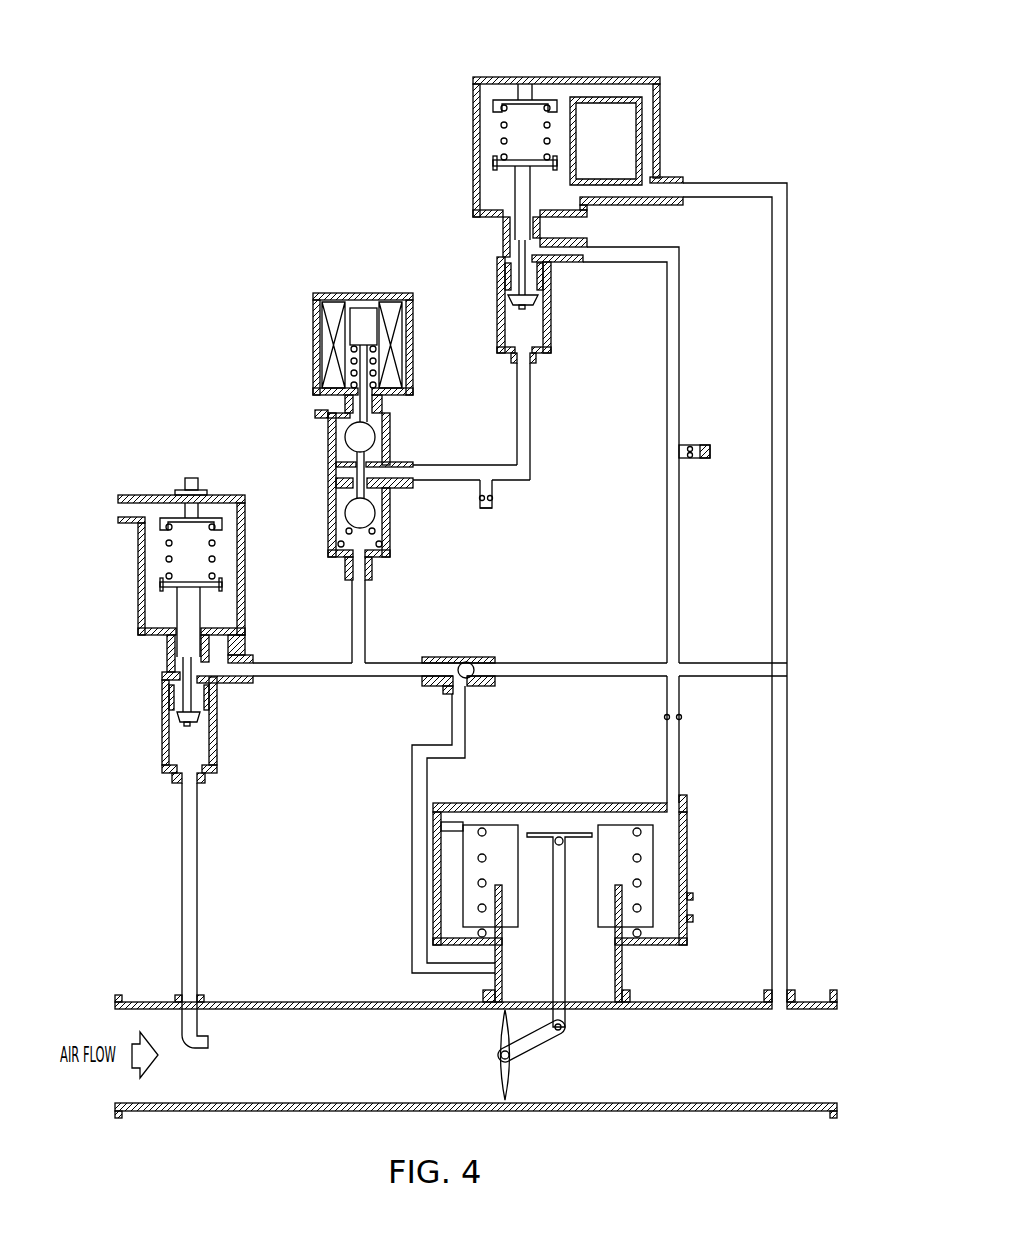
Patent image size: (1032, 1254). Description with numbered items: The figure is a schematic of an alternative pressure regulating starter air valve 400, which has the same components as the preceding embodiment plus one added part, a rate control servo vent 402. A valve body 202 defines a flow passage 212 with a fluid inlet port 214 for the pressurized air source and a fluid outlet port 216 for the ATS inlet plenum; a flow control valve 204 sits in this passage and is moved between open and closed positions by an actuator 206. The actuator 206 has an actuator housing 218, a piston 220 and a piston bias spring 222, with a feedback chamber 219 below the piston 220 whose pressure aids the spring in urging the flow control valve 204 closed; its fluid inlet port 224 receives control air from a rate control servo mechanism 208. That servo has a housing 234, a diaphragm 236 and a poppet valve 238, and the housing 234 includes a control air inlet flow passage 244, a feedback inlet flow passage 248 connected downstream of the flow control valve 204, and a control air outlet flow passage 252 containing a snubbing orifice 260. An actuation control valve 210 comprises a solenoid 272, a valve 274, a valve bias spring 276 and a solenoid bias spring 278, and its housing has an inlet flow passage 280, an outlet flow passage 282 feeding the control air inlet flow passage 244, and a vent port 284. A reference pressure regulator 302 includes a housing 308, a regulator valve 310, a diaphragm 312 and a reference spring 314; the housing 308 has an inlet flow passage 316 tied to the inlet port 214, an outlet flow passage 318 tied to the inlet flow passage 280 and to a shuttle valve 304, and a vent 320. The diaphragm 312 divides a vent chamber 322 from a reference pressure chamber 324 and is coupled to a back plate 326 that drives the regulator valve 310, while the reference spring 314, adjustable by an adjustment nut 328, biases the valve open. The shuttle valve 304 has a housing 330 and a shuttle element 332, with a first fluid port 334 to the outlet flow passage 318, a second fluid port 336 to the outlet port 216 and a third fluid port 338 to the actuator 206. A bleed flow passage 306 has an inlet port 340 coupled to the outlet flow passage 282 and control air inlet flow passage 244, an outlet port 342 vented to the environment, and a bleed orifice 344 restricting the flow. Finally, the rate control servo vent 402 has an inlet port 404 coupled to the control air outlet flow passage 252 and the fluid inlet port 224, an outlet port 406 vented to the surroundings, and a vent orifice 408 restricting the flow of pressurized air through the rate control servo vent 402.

The pressure regulating starter air valve 400 is at (247, 122).
The valve body 202 is at (285, 1002).
The flow control valve 204 is at (520, 1088).
The actuator 206 is at (565, 798).
The rate control servo mechanism 208 is at (542, 68).
The actuation control valve 210 is at (293, 320).
The flow passage 212 is at (426, 1057).
The fluid inlet port 214 is at (115, 1103).
The fluid outlet port 216 is at (833, 1087).
The actuator housing 218 is at (525, 803).
The feedback chamber 219 is at (622, 975).
The piston 220 is at (585, 812).
The piston bias spring 222 is at (687, 898).
The fluid inlet port 224 is at (680, 778).
The housing 234 is at (660, 92).
The diaphragm 236 is at (493, 160).
The poppet valve 238 is at (532, 303).
The control air inlet flow passage 244 is at (530, 428).
The feedback inlet flow passage 248 is at (731, 190).
The control air outlet flow passage 252 is at (627, 250).
The snubbing orifice 260 is at (682, 716).
The solenoid 272 is at (320, 345).
The valve 274 is at (376, 440).
The valve bias spring 276 is at (376, 520).
The solenoid bias spring 278 is at (404, 382).
The inlet flow passage 280 is at (352, 612).
The outlet flow passage 282 is at (415, 473).
The vent port 284 is at (315, 412).
The reference pressure regulator 302 is at (158, 470).
The shuttle valve 304 is at (468, 650).
The bleed flow passage 306 is at (473, 520).
The housing 308 is at (223, 495).
The regulator valve 310 is at (177, 722).
The diaphragm 312 is at (158, 578).
The reference spring 314 is at (167, 560).
The inlet flow passage 316 is at (182, 815).
The outlet flow passage 318 is at (277, 672).
The vent 320 is at (118, 497).
The vent chamber 322 is at (197, 552).
The reference pressure chamber 324 is at (158, 610).
The back plate 326 is at (200, 575).
The adjustment nut 328 is at (193, 475).
The housing 330 is at (440, 657).
The shuttle element 332 is at (474, 662).
The first fluid port 334 is at (425, 680).
The second fluid port 336 is at (525, 677).
The third fluid port 338 is at (452, 705).
The inlet port 340 is at (484, 478).
The outlet port 342 is at (488, 518).
The bleed orifice 344 is at (493, 500).
The rate control servo vent 402 is at (702, 440).
The inlet port 404 is at (680, 450).
The outlet port 406 is at (710, 452).
The vent orifice 408 is at (700, 460).